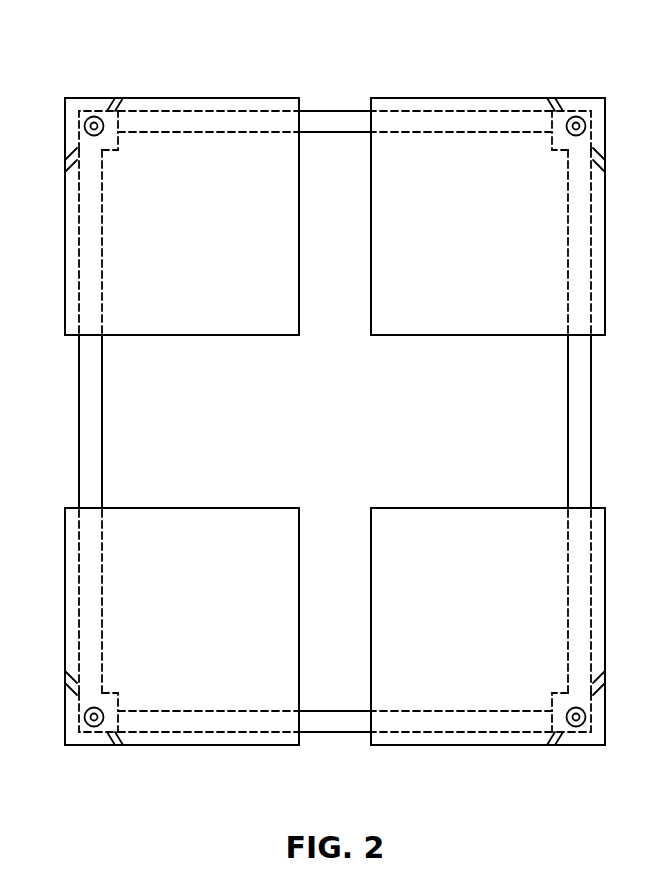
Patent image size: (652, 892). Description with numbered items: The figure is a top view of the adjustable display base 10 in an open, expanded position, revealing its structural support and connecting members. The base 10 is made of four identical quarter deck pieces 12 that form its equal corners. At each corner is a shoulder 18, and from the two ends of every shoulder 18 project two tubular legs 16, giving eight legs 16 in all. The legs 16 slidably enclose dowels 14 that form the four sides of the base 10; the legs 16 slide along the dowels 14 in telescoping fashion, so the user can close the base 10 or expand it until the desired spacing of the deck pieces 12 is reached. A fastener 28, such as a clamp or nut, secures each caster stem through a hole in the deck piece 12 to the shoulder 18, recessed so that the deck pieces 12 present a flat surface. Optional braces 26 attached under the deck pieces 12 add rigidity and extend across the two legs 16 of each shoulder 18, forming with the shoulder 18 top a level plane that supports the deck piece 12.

The adjustable display base 10 is at (334, 74).
The quarter deck piece 12 is at (181, 167).
The dowel 14 is at (333, 142).
The tubular leg 16 is at (250, 126).
The shoulder 18 is at (112, 109).
The brace 26 is at (137, 105).
The fastener 28 is at (85, 121).